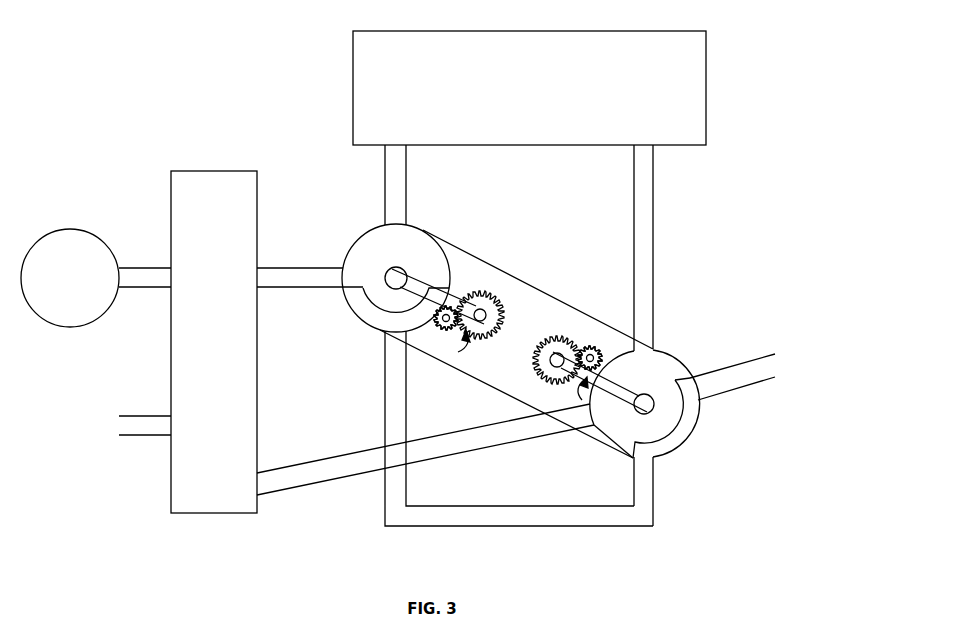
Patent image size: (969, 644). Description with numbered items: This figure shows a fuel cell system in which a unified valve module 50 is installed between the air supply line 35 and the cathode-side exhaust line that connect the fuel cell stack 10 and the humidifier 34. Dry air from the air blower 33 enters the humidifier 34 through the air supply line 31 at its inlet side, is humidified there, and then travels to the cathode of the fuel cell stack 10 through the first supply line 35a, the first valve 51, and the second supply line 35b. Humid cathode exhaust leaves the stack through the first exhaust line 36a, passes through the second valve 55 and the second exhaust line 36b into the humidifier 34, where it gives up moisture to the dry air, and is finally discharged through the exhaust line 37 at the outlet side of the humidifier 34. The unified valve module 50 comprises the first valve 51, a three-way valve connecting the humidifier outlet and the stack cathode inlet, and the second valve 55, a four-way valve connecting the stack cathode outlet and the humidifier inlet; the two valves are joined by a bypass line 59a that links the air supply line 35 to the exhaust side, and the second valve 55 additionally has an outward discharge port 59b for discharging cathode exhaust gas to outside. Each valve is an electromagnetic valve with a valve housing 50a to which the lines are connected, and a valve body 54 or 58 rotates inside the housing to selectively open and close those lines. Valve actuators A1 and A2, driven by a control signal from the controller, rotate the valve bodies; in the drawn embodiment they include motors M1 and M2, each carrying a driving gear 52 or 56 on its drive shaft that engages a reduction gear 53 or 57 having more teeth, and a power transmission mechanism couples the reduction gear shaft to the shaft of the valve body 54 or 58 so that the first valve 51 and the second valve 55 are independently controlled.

The fuel cell stack 10 is at (352, 67).
The air supply line 31 is at (143, 267).
The air blower 33 is at (81, 230).
The humidifier 34 is at (200, 171).
The air supply line 35 is at (302, 164).
The first supply line 35a is at (289, 266).
The second supply line 35b is at (385, 193).
The first exhaust line 36a is at (655, 250).
The second exhaust line 36b is at (327, 482).
The exhaust line 37 is at (143, 437).
The unified valve module 50 is at (516, 335).
The valve housing 50a is at (509, 272).
The first valve 51 is at (421, 251).
The driving gear 52 is at (447, 332).
The reduction gear 53 is at (503, 318).
The valve body 54 is at (362, 310).
The second valve 55 is at (664, 369).
The driving gear 56 is at (595, 344).
The reduction gear 57 is at (553, 335).
The valve body 58 is at (682, 441).
The bypass line 59a is at (352, 466).
The outward discharge port 59b is at (750, 384).
The motor M1 is at (440, 330).
The motor M2 is at (603, 352).
The valve actuator A1 is at (462, 352).
The valve actuator A2 is at (580, 403).